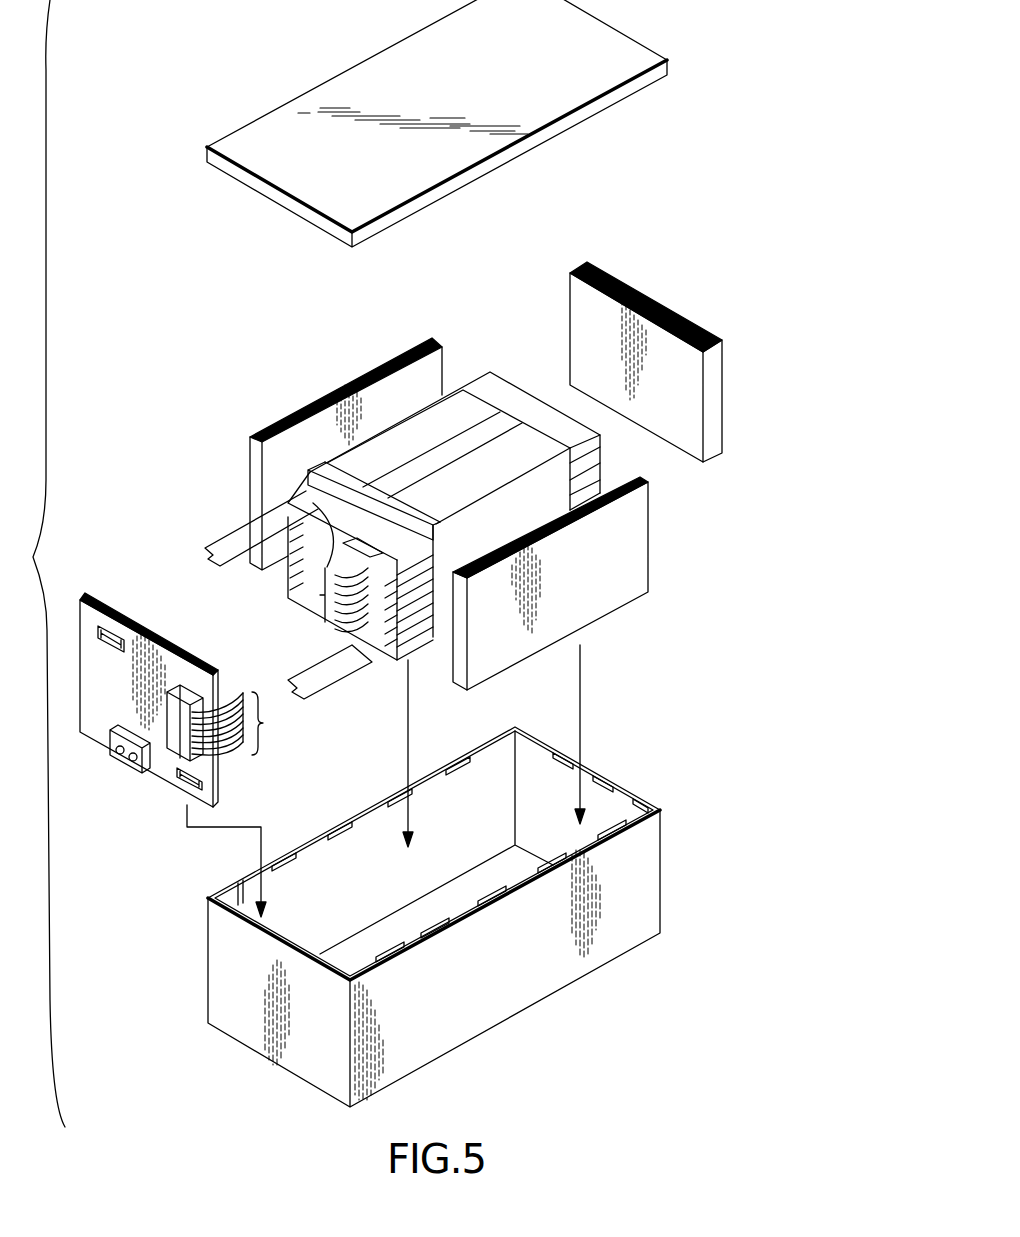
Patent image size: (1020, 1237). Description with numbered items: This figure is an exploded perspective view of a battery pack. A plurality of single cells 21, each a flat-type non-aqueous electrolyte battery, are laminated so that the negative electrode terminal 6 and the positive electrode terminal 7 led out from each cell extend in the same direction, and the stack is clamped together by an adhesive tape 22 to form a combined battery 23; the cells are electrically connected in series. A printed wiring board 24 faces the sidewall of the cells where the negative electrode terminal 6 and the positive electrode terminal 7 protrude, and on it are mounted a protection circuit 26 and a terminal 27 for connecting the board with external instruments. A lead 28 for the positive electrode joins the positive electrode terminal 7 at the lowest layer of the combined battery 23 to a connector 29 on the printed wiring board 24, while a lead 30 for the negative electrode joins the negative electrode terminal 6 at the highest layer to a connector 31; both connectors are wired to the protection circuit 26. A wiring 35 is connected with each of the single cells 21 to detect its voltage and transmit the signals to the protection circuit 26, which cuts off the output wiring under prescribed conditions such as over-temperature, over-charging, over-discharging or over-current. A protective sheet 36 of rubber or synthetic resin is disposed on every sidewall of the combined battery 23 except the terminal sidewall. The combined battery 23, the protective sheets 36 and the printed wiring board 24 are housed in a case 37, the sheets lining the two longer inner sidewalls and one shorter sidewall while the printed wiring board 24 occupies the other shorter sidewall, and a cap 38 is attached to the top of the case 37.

The negative electrode terminal 6 is at (300, 497).
The positive electrode terminal 7 is at (368, 552).
The single cell 21 is at (595, 444).
The adhesive tape 22 is at (515, 452).
The combined battery 23 is at (390, 430).
The printed wiring board 24 is at (113, 606).
The protection circuit 26 is at (180, 685).
The terminal 27 is at (133, 766).
The lead for the positive electrode 28 is at (332, 678).
The connector for the positive terminal 29 is at (205, 787).
The lead for the negative electrode 30 is at (213, 540).
The connector for the negative terminal 31 is at (117, 633).
The wiring 35 is at (327, 593).
The protective sheet 36 is at (312, 412).
The case 37 is at (648, 880).
The cap 38 is at (612, 47).